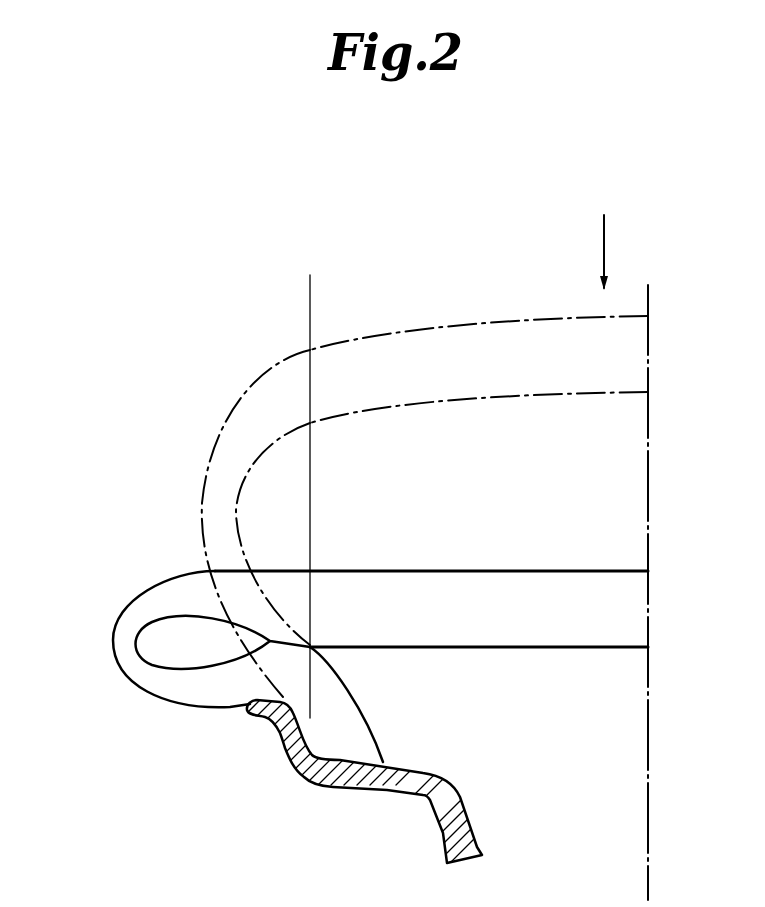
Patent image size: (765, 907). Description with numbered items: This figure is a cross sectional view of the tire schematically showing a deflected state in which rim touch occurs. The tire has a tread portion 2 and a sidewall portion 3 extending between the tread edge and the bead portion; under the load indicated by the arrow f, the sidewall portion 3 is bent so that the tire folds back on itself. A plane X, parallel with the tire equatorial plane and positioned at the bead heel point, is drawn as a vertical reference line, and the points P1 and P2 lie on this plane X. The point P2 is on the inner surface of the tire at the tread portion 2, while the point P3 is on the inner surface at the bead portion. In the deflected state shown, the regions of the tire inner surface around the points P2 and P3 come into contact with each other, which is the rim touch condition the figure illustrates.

The tread portion 2 is at (458, 327).
The sidewall portion 3 is at (200, 482).
The point P1 is at (300, 342).
The point P2 is at (318, 428).
The point P3 is at (330, 651).
The plane X is at (311, 312).
The force direction f is at (605, 243).